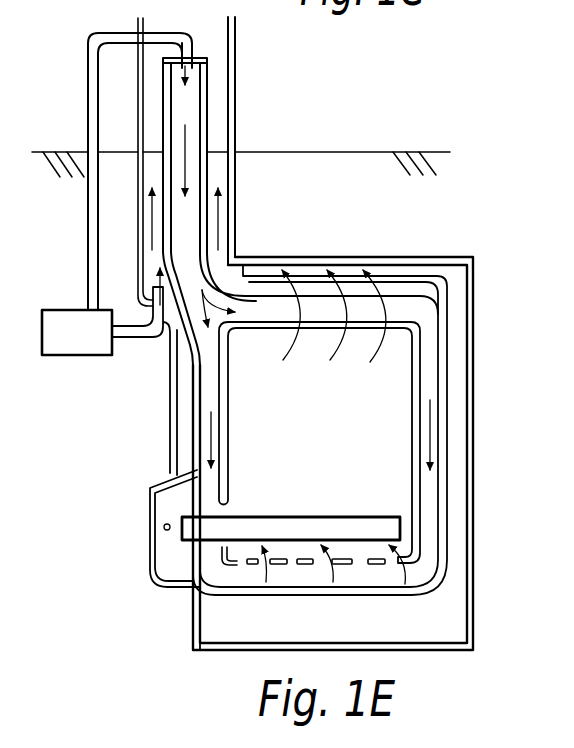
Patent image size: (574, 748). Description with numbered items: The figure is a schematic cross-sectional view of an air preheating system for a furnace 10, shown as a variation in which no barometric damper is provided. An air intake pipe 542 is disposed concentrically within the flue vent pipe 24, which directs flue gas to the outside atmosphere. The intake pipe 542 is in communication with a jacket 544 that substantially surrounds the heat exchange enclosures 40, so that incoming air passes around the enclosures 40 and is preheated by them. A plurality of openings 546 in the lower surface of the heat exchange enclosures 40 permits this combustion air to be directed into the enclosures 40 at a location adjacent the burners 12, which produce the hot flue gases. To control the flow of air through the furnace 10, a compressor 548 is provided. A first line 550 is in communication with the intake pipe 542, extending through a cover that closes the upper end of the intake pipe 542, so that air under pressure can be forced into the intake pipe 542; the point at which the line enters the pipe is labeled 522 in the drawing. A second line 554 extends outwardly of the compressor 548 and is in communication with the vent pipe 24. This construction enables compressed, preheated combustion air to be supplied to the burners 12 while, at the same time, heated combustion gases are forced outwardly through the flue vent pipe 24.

The furnace 10 is at (392, 230).
The burners 12 is at (274, 524).
The flue vent pipe 24 is at (235, 100).
The heat exchange enclosures 40 is at (311, 322).
The inlet leg 522 is at (198, 57).
The air intake pipe 542 is at (207, 149).
The jacket 544 is at (196, 403).
The openings 546 is at (355, 566).
The compressor 548 is at (66, 318).
The first line 550 is at (88, 228).
The second line 554 is at (132, 339).